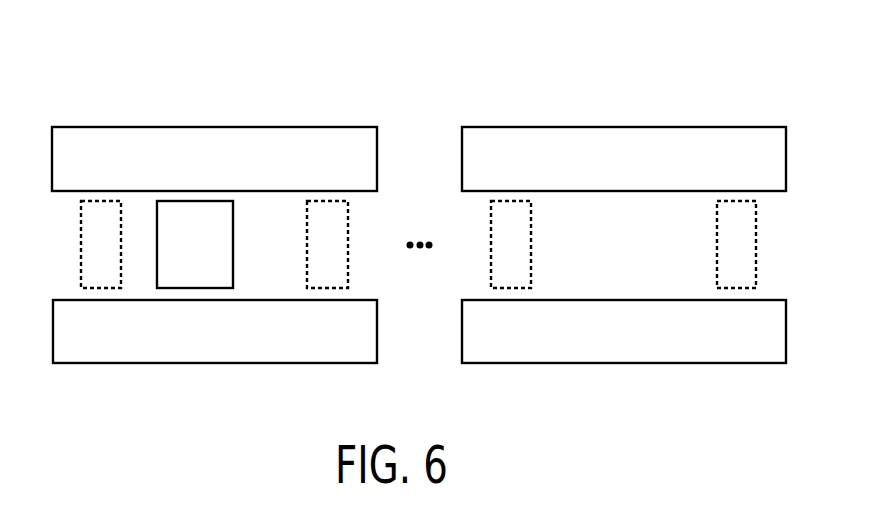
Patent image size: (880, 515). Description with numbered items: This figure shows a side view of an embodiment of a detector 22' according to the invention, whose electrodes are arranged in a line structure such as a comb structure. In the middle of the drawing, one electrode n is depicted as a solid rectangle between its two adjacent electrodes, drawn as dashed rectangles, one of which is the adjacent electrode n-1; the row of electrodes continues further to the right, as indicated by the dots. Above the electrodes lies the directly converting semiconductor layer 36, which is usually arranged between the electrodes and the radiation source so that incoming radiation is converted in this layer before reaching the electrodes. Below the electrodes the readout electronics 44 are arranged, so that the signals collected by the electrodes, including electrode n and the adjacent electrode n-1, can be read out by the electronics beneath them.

The detector 22' is at (397, 216).
The directly converting semiconductor layer 36 is at (52, 157).
The readout electronics 44 is at (52, 332).
The adjacent electrode n-1 is at (139, 287).
The electrode n is at (199, 287).